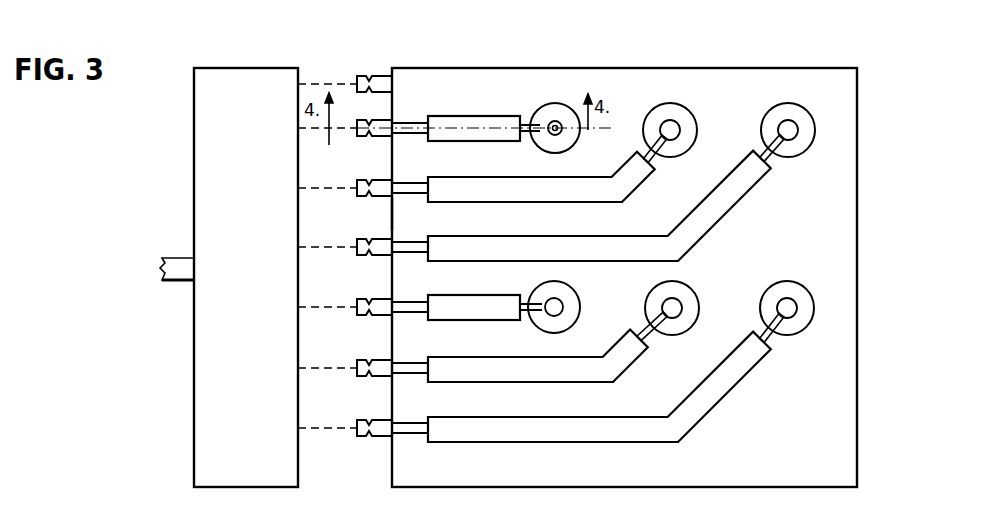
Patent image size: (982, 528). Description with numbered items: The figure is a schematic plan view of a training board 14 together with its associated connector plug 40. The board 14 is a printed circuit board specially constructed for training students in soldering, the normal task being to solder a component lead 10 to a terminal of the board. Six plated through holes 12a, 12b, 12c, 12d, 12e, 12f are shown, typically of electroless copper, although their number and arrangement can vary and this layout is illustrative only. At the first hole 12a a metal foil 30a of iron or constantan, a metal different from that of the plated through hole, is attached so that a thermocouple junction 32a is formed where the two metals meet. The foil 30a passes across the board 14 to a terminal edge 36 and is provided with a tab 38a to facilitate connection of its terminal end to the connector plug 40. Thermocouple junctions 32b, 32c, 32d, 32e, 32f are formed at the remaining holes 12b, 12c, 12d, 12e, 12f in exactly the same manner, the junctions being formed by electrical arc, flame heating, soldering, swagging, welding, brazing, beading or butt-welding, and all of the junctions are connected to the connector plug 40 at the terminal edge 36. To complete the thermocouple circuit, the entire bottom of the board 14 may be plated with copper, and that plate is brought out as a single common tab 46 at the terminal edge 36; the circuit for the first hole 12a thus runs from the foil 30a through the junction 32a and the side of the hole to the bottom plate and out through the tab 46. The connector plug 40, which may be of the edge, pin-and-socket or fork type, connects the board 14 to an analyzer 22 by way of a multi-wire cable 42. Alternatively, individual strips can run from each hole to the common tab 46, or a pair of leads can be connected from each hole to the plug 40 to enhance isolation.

The component lead 10 is at (560, 132).
The plated through hole 12a is at (551, 122).
The plated through hole 12b is at (674, 128).
The plated through hole 12c is at (790, 130).
The plated through hole 12d is at (560, 307).
The plated through hole 12e is at (677, 308).
The plated through hole 12f is at (788, 310).
The printed circuit board 14 is at (835, 237).
The analyzer 22 is at (83, 289).
The metal foil 30a is at (408, 126).
The thermocouple junction 32a is at (468, 130).
The thermocouple junction 32b is at (477, 192).
The thermocouple junction 32c is at (515, 250).
The thermocouple junction 32d is at (462, 308).
The thermocouple junction 32e is at (483, 370).
The thermocouple junction 32f is at (512, 427).
The terminal edge 36 is at (392, 213).
The tab 38a is at (362, 137).
The connector plug 40 is at (213, 455).
The multi-wire cable 42 is at (172, 268).
The tab 46 is at (378, 77).